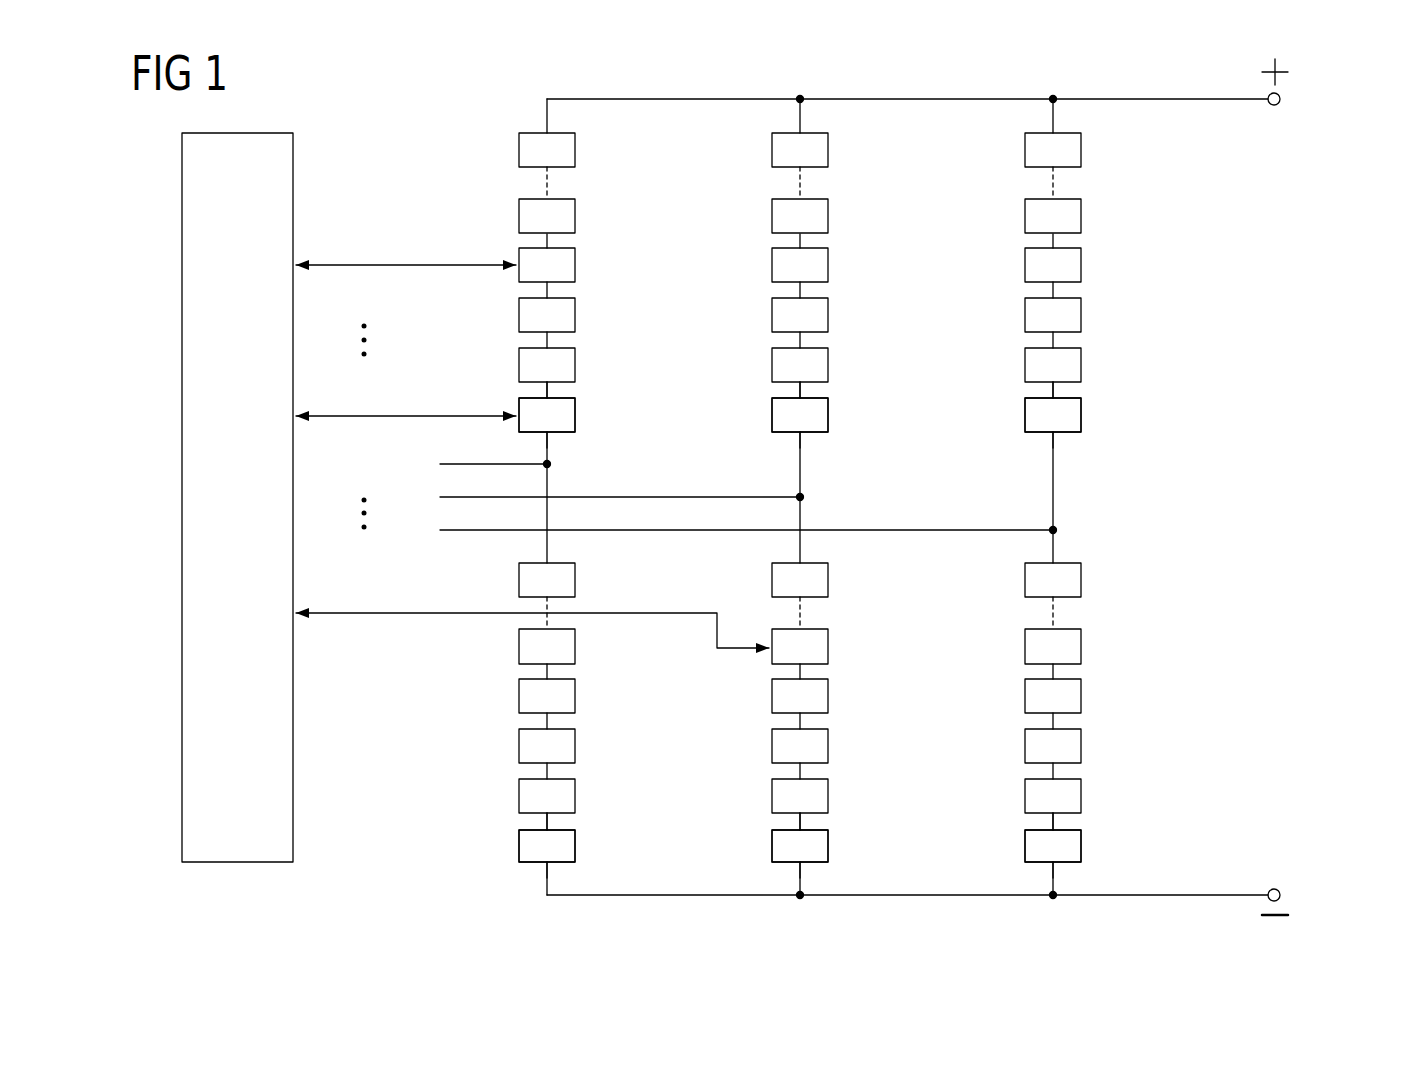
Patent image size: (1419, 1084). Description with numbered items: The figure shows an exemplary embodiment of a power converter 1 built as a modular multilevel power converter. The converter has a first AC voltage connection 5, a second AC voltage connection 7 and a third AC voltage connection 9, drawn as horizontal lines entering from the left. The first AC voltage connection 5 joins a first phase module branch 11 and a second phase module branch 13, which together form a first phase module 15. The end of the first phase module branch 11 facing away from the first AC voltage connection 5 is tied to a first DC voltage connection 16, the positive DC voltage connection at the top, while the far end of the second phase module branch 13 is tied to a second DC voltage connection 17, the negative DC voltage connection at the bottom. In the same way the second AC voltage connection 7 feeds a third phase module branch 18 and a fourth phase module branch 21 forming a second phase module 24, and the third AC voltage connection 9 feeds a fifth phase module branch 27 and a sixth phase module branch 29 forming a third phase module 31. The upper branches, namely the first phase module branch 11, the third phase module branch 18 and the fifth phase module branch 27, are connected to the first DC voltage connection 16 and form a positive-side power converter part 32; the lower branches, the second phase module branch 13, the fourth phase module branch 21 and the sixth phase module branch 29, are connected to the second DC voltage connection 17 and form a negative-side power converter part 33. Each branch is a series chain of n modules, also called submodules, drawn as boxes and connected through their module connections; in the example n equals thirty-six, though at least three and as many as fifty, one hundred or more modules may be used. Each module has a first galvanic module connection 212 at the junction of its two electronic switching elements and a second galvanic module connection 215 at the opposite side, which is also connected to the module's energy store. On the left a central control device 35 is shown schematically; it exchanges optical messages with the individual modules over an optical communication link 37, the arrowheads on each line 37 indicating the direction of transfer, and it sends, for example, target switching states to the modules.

The power converter 1 is at (1347, 131).
The first AC voltage connection 5 is at (440, 464).
The second AC voltage connection 7 is at (440, 497).
The third AC voltage connection 9 is at (440, 530).
The first phase module branch 11 is at (583, 440).
The second phase module branch 13 is at (585, 872).
The first phase module 15 is at (502, 905).
The first DC voltage connection 16 is at (1220, 97).
The second DC voltage connection 17 is at (1220, 897).
The third phase module branch 18 is at (836, 440).
The fourth phase module branch 21 is at (838, 872).
The second phase module 24 is at (755, 905).
The fifth phase module branch 27 is at (1089, 440).
The sixth phase module branch 29 is at (1091, 872).
The third phase module 31 is at (1008, 905).
The positive-side power converter part 32 is at (1200, 292).
The negative-side power converter part 33 is at (1200, 729).
The control device 35 is at (238, 862).
The optical communication link 37 is at (343, 265).
The first galvanic module connection 212 is at (547, 392).
The second galvanic module connection 215 is at (547, 438).